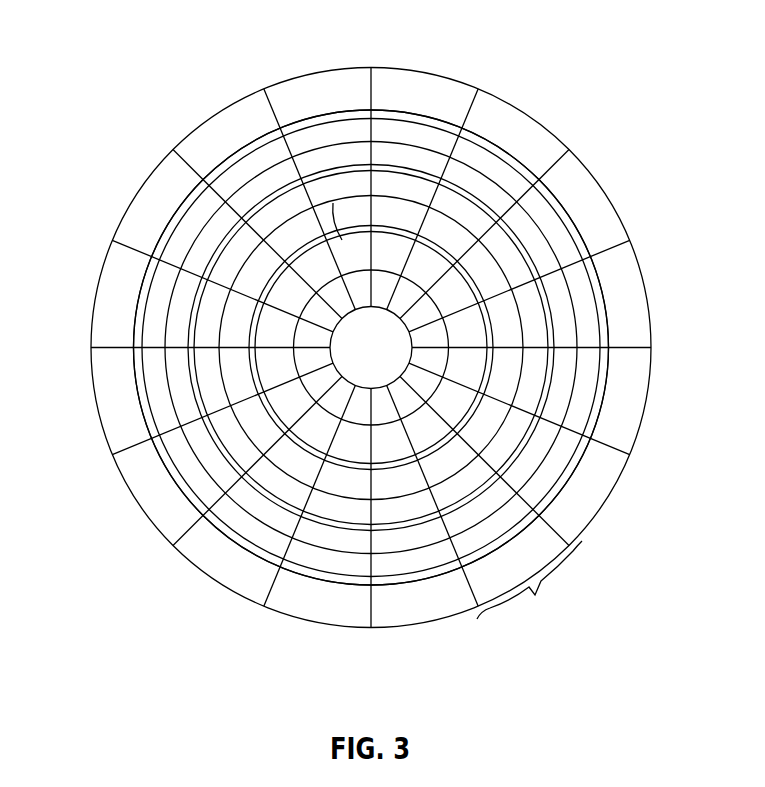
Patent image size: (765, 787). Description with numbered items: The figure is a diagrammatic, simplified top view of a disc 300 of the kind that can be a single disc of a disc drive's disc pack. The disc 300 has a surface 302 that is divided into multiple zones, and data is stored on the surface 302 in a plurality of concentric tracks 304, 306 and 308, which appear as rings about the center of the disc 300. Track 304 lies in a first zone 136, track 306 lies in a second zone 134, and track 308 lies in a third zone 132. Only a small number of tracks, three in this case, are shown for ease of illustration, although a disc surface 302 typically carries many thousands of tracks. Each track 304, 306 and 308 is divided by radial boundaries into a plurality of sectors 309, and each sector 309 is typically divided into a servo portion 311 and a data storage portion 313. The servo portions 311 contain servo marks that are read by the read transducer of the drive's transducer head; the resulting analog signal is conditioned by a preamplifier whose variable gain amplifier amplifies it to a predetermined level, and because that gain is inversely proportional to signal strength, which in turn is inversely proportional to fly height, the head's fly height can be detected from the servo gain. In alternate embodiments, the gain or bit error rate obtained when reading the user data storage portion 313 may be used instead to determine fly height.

The disc 300 is at (630, 70).
The surface 302 is at (467, 127).
The track 304 is at (338, 463).
The track 306 is at (322, 530).
The track 308 is at (227, 542).
The sector 309 is at (529, 585).
The servo portion 311 is at (517, 528).
The data storage portion 313 is at (481, 556).
The third zone 132 is at (643, 392).
The second zone 134 is at (220, 318).
The first zone 136 is at (352, 270).